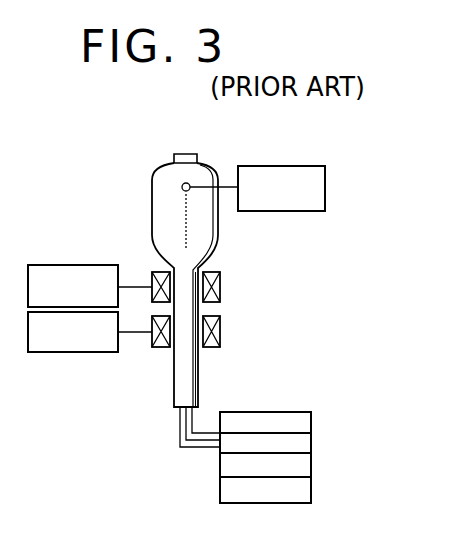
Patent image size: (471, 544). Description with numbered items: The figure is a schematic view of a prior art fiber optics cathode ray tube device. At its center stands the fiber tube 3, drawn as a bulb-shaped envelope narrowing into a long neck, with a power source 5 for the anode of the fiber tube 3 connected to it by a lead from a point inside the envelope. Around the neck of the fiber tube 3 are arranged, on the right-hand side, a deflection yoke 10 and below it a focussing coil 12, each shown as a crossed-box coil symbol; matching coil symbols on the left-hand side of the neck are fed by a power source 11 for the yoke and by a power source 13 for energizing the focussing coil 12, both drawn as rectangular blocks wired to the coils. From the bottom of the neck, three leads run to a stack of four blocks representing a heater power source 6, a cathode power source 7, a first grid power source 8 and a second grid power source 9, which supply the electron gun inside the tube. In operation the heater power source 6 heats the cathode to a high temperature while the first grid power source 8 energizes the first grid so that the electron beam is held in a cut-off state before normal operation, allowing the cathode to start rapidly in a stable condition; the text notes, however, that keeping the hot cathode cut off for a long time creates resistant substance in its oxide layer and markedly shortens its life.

The fiber tube 3 is at (152, 193).
The power source for the anode 5 is at (283, 166).
The heater power source 6 is at (311, 422).
The cathode power source 7 is at (311, 445).
The first grid power source 8 is at (311, 465).
The second grid power source 9 is at (311, 490).
The deflection yoke 10 is at (220, 282).
The power source for the yoke 11 is at (70, 265).
The focussing coil 12 is at (220, 338).
The power source for energizing the focussing coil 13 is at (70, 352).